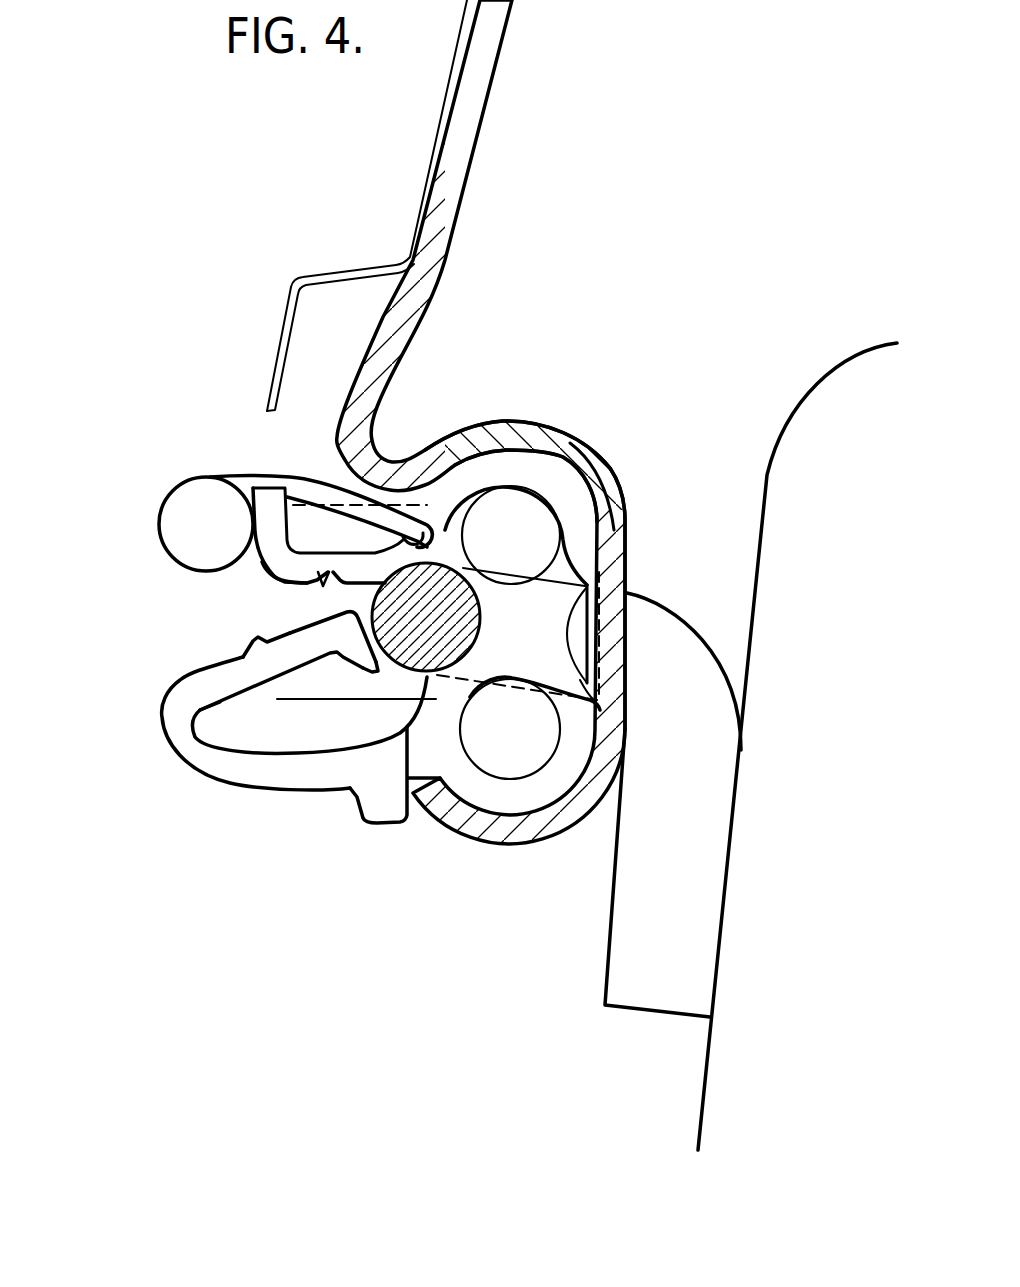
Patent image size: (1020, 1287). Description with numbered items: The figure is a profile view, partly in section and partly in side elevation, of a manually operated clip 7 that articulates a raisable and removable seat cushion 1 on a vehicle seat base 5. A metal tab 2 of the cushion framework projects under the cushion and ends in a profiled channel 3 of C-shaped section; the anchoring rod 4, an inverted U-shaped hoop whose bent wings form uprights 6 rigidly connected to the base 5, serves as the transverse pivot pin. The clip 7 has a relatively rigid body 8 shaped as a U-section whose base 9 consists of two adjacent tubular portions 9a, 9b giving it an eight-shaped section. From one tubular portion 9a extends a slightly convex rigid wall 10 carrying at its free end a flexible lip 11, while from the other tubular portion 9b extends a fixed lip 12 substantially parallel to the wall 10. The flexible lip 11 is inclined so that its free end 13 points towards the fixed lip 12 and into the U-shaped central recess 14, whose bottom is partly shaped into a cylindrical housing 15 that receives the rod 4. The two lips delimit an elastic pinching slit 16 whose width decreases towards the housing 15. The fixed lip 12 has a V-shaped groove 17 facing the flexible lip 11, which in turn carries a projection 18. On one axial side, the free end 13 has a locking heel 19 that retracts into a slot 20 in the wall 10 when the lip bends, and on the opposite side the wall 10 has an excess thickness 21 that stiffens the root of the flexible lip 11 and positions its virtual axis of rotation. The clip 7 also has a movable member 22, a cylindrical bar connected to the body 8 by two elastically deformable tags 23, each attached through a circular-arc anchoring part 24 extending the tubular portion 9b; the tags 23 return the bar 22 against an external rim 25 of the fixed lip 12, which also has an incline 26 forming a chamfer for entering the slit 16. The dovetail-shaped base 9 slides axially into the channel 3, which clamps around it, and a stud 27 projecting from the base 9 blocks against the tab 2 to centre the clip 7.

The seat cushion 1 is at (335, 189).
The metal tab 2 is at (478, 80).
The profiled channel 3 is at (600, 492).
The anchoring rod 4 is at (428, 632).
The seat base 5 is at (767, 473).
The upright 6 is at (683, 877).
The clip 7 is at (128, 710).
The body 8 is at (427, 760).
The base 9 is at (513, 633).
The tubular portion 9a is at (513, 793).
The tubular portion 9b is at (471, 497).
The rigid wall 10 is at (210, 755).
The flexible lip 11 is at (207, 693).
The fixed lip 12 is at (360, 578).
The free end 13 is at (343, 623).
The central recess 14 is at (303, 682).
The housing 15 is at (460, 537).
The pinching slit 16 is at (292, 596).
The groove 17 is at (322, 584).
The projection 18 is at (257, 645).
The locking heel 19 is at (367, 663).
The slot 20 is at (380, 798).
The excess thickness 21 is at (295, 730).
The movable member 22 is at (192, 528).
The elastically deformable tag 23 is at (323, 493).
The anchoring part 24 is at (510, 475).
The external rim 25 is at (273, 530).
The incline 26 is at (270, 575).
The stud 27 is at (590, 633).